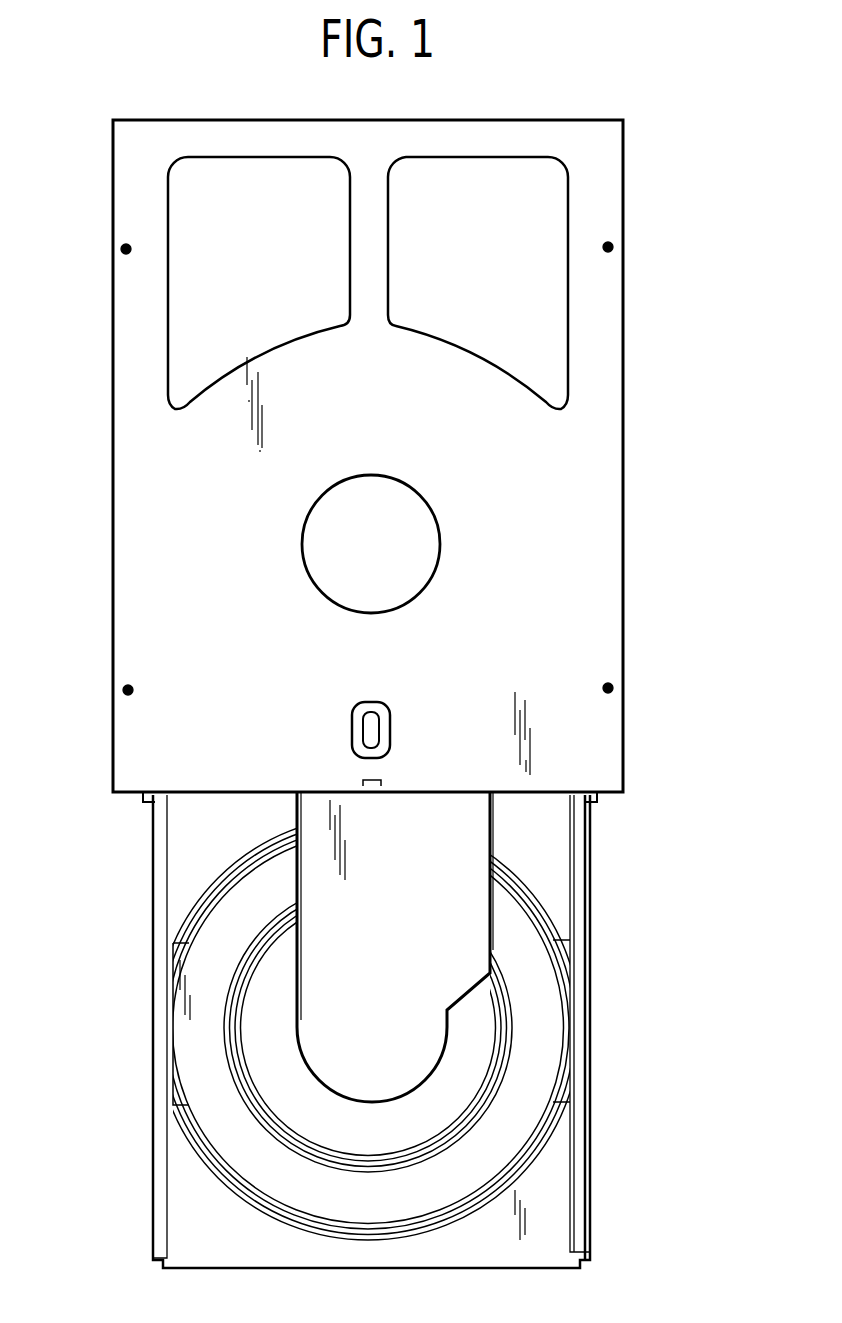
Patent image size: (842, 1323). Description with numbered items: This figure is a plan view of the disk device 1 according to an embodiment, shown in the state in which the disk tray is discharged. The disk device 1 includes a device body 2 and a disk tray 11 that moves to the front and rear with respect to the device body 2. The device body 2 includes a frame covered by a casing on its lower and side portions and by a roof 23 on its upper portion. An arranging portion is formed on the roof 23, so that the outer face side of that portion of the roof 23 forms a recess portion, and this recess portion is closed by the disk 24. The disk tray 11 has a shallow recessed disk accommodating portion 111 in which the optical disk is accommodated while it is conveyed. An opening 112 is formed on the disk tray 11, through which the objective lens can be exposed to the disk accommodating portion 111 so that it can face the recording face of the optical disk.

The disk device 1 is at (648, 336).
The device body 2 is at (642, 575).
The roof 23 is at (580, 474).
The disk 24 is at (330, 548).
The disk tray 11 is at (605, 1103).
The disk accommodating portion 111 is at (533, 1033).
The opening 112 is at (372, 990).